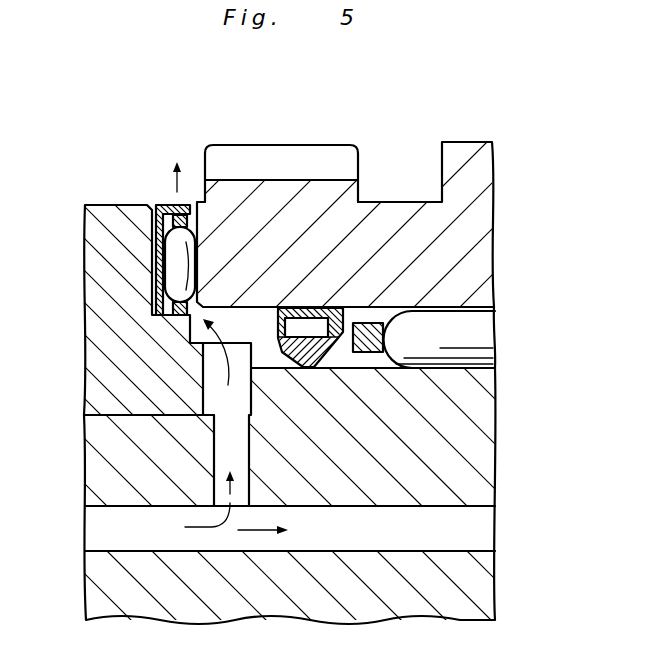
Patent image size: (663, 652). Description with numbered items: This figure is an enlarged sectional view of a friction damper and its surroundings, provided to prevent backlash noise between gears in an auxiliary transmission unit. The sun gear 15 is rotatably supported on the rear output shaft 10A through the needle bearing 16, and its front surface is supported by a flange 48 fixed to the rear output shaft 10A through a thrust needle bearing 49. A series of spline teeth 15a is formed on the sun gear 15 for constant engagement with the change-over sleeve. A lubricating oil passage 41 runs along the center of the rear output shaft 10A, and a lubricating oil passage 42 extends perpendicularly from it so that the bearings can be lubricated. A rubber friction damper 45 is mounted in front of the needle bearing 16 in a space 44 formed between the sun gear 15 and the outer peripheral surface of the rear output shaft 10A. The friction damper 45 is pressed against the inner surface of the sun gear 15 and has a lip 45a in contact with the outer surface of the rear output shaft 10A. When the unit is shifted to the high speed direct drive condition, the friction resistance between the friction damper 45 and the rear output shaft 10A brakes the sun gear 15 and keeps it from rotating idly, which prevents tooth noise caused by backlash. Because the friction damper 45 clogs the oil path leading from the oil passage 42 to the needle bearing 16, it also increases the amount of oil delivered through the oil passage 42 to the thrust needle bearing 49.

The rear output shaft 10A is at (483, 420).
The sun gear 15 is at (335, 207).
The spline teeth 15a is at (283, 153).
The needle bearing 16 is at (483, 325).
The lubricating oil passage 41 is at (95, 510).
The lubricating oil passage 42 is at (217, 451).
The space 44 is at (265, 333).
The friction damper 45 is at (310, 340).
The lip 45a is at (293, 373).
The flange 48 is at (110, 210).
The thrust needle bearing 49 is at (194, 248).